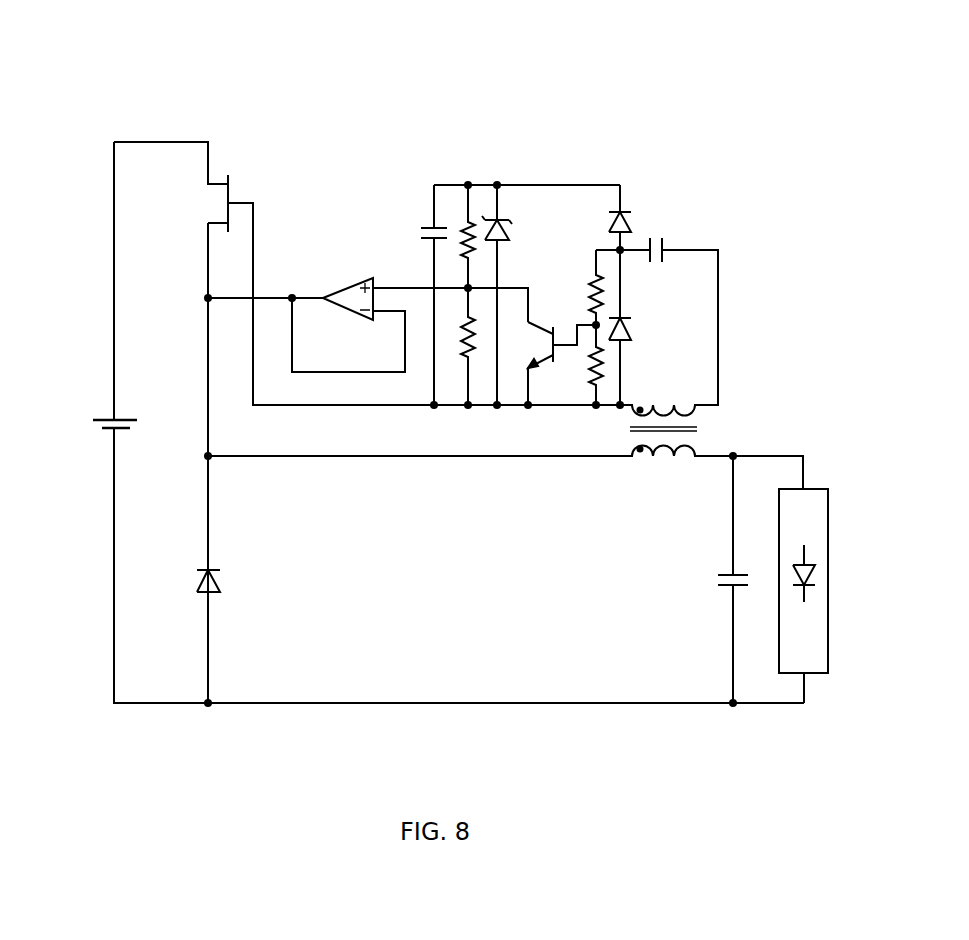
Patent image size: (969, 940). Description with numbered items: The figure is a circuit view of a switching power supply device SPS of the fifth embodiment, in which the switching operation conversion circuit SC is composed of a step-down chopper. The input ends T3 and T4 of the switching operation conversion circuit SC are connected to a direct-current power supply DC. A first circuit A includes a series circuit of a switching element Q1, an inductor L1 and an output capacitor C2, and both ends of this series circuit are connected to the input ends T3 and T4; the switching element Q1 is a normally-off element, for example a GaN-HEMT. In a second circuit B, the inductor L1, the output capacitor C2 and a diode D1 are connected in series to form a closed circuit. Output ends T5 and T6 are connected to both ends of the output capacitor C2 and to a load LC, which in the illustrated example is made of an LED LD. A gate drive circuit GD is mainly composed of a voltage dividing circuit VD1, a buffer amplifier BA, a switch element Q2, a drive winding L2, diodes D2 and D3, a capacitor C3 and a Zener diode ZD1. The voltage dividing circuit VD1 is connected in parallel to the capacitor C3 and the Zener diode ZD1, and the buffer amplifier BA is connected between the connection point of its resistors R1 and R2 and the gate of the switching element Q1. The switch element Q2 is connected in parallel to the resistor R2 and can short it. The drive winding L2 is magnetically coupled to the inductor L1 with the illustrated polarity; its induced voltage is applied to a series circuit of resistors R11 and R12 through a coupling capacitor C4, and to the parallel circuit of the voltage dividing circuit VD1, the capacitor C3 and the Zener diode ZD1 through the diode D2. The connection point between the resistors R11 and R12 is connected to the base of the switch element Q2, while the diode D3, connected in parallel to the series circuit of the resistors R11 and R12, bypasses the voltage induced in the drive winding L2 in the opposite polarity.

The switching power supply device SPS is at (476, 31).
The switching operation conversion circuit SC is at (340, 154).
The gate drive circuit GD is at (543, 182).
The input end T3 is at (158, 141).
The switching element Q1 is at (219, 207).
The first circuit A is at (226, 333).
The buffer amplifier BA is at (341, 313).
The capacitor C3 is at (421, 234).
The resistor R1 is at (460, 232).
The Zener diode ZD1 is at (506, 232).
The voltage dividing circuit VD1 is at (473, 276).
The resistor R2 is at (462, 336).
The switch element Q2 is at (547, 344).
The resistor R11 is at (590, 305).
The resistor R12 is at (588, 376).
The diode D2 is at (609, 222).
The diode D3 is at (632, 328).
The coupling capacitor C4 is at (657, 242).
The drive winding L2 is at (664, 403).
The inductor L1 is at (663, 467).
The output end T5 is at (764, 455).
The load LC is at (828, 528).
The LED LD is at (812, 579).
The output capacitor C2 is at (718, 581).
The output end T6 is at (762, 710).
The diode D1 is at (221, 580).
The second circuit B is at (222, 528).
The input end T4 is at (160, 710).
The direct-current power supply DC is at (93, 422).